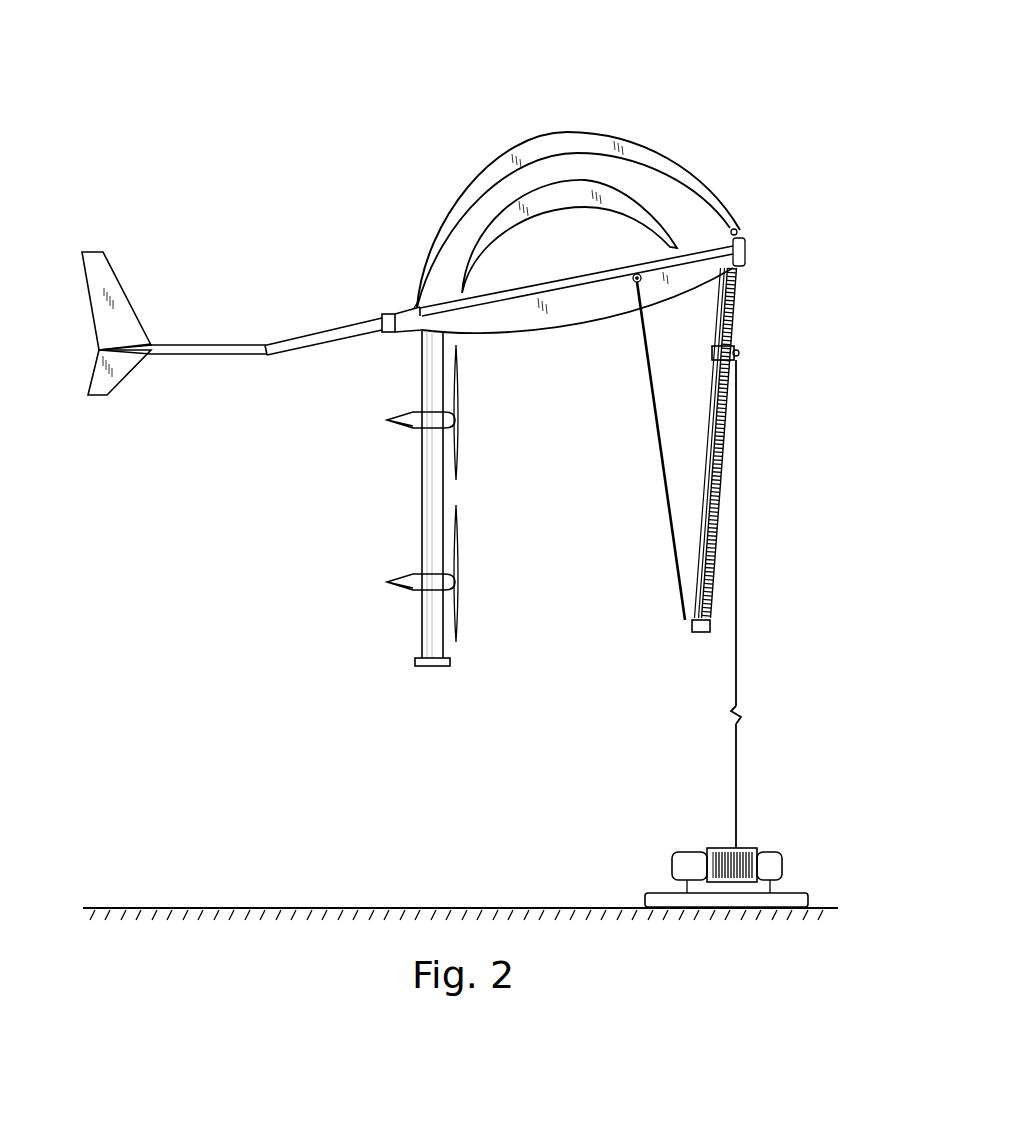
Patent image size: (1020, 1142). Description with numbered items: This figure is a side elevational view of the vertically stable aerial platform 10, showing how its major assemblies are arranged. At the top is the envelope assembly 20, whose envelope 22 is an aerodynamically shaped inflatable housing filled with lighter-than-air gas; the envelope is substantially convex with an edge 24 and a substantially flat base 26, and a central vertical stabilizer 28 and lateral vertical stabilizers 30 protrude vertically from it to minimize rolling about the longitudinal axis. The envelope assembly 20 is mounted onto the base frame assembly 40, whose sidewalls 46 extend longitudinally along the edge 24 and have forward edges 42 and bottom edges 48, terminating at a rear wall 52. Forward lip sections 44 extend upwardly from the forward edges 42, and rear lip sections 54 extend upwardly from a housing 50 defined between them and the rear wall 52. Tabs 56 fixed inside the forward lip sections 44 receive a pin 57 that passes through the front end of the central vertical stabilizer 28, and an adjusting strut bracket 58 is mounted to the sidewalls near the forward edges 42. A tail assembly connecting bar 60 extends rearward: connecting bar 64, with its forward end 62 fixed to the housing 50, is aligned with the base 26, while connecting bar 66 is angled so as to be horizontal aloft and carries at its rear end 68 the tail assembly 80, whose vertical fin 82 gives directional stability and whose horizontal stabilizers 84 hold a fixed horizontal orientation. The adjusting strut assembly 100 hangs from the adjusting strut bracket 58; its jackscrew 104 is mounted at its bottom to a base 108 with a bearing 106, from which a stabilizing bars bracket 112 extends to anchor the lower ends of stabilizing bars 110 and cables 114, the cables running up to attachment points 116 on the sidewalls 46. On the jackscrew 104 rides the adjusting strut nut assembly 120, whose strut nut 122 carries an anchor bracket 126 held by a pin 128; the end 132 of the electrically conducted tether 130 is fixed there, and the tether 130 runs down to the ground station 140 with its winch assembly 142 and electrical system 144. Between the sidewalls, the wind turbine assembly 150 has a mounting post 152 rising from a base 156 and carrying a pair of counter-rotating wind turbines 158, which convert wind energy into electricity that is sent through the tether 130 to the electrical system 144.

The vertically stable aerial platform 10 is at (316, 76).
The envelope assembly 20 is at (487, 110).
The envelope 22 is at (640, 150).
The edge 24 is at (545, 282).
The base 26 is at (530, 306).
The central vertical stabilizer 28 is at (592, 140).
The lateral vertical stabilizers 30 is at (568, 163).
The base frame assembly 40 is at (386, 348).
The forward edges 42 is at (748, 244).
The forward lip sections 44 is at (752, 240).
The sidewalls 46 is at (585, 305).
The bottom edges 48 is at (612, 320).
The housing 50 is at (397, 318).
The rear wall 52 is at (386, 320).
The rear lip sections 54 is at (417, 305).
The tabs 56 is at (735, 226).
The pin 57 is at (741, 232).
The adjusting strut bracket 58 is at (746, 266).
The tail assembly connecting bar 60 is at (234, 310).
The forward end 62 is at (380, 318).
The connecting bar 64 is at (292, 347).
The connecting bar 66 is at (192, 357).
The rear end 68 is at (151, 346).
The tail assembly 80 is at (138, 398).
The vertical fin 82 is at (102, 268).
The horizontal stabilizers 84 is at (131, 360).
The adjusting strut assembly 100 is at (750, 296).
The jackscrew 104 is at (712, 425).
The bearing 106 is at (712, 627).
The base 108 is at (697, 634).
The stabilizing bars 110 is at (662, 434).
The stabilizing bars bracket 112 is at (690, 622).
The cables 114 is at (664, 483).
The attachment points 116 is at (641, 282).
The adjusting strut nut assembly 120 is at (742, 338).
The strut nut 122 is at (714, 349).
The anchor bracket 126 is at (742, 362).
The pin 128 is at (742, 352).
The electrically conducted tether 130 is at (738, 512).
The end 132 is at (714, 380).
The ground station 140 is at (630, 871).
The winch assembly 142 is at (772, 865).
The electrical system 144 is at (688, 865).
The wind turbine assembly 150 is at (478, 524).
The mounting post 152 is at (430, 502).
The base 156 is at (418, 661).
The wind turbines 158 is at (420, 421).